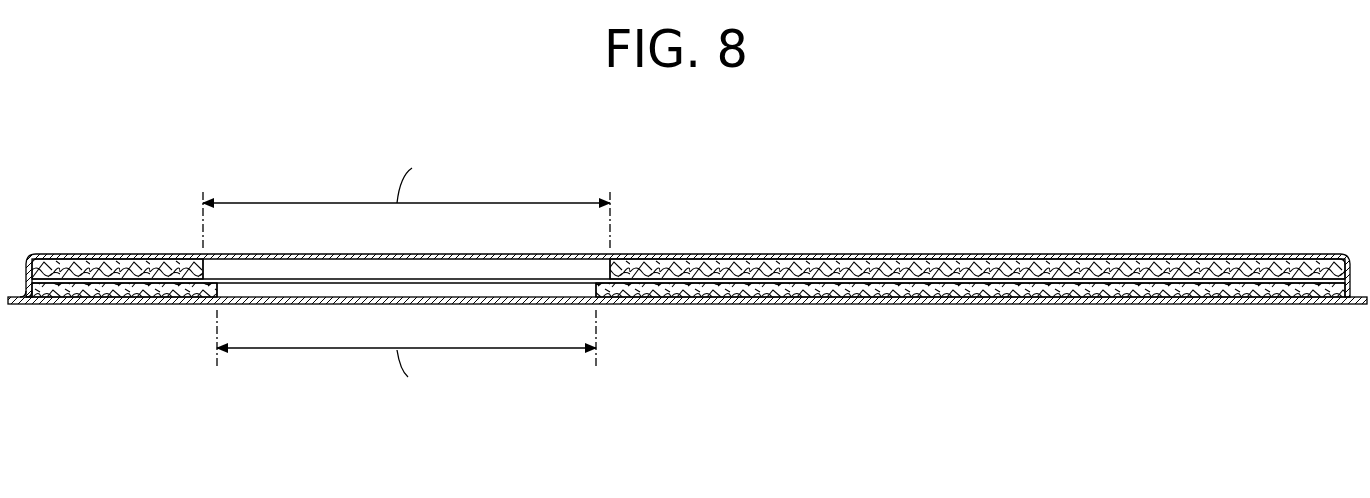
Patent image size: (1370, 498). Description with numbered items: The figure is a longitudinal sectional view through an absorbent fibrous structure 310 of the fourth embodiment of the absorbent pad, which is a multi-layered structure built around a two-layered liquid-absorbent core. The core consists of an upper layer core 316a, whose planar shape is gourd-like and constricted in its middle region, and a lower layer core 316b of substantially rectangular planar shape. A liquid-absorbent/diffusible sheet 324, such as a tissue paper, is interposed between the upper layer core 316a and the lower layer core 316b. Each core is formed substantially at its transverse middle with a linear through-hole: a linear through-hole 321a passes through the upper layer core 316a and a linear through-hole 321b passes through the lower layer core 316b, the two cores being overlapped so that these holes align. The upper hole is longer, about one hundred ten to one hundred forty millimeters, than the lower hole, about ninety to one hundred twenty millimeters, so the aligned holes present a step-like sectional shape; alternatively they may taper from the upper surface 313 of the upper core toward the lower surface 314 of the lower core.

The absorbent fibrous structure 310 is at (1106, 170).
The upper surface 313 is at (1230, 254).
The lower surface 314 is at (1213, 305).
The upper layer core 316a is at (1027, 268).
The lower layer core 316b is at (1067, 290).
The linear through-hole 321a is at (485, 268).
The linear through-hole 321b is at (538, 292).
The liquid-absorbent/diffusible sheet 324 is at (417, 284).